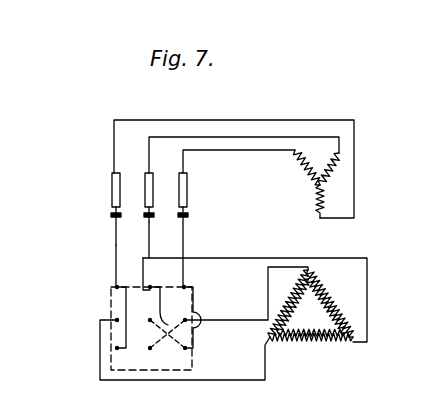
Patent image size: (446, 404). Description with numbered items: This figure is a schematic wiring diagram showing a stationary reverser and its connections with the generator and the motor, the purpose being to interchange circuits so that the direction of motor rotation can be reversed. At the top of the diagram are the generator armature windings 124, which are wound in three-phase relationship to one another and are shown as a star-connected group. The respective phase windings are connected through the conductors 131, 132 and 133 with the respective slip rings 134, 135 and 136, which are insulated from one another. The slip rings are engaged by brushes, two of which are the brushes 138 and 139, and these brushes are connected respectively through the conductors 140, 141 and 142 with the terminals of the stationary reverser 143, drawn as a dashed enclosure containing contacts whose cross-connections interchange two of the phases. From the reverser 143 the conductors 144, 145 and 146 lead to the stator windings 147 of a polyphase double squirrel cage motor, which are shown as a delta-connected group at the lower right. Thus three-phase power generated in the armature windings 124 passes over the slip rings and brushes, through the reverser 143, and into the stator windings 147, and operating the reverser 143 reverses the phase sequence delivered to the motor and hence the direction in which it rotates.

The armature windings 124 is at (310, 180).
The conductor 131 is at (243, 152).
The conductor 132 is at (265, 137).
The conductor 133 is at (333, 108).
The slip ring 134 is at (187, 192).
The slip ring 135 is at (148, 182).
The slip ring 136 is at (110, 190).
The brush 138 is at (152, 218).
The brush 139 is at (116, 215).
The conductor 140 is at (185, 247).
The conductor 141 is at (148, 238).
The conductor 142 is at (112, 261).
The stationary reverser 143 is at (107, 293).
The conductor 144 is at (310, 248).
The conductor 145 is at (238, 303).
The conductor 146 is at (228, 372).
The stator windings 147 is at (347, 343).